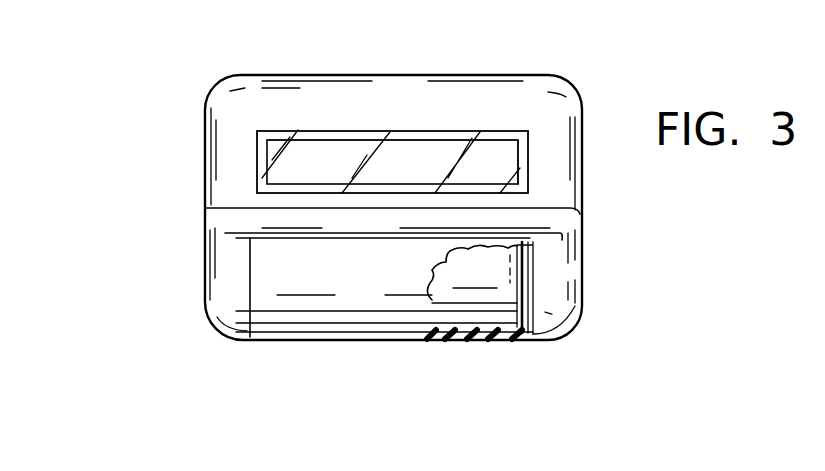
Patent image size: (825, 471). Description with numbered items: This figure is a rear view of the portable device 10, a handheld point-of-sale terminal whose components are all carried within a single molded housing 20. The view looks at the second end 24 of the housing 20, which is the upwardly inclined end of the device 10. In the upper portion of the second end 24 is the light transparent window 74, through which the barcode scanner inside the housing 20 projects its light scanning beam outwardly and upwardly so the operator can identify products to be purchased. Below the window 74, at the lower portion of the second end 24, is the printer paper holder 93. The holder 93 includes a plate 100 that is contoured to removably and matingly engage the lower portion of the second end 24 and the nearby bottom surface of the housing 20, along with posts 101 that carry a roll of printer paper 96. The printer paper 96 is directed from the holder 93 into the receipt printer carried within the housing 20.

The portable device 10 is at (207, 75).
The housing 20 is at (203, 298).
The second end 24 is at (403, 110).
The light transparent window 74 is at (507, 154).
The printer paper holder 93 is at (303, 338).
The printer paper 96 is at (477, 300).
The plate 100 is at (455, 340).
The posts 101 is at (528, 295).